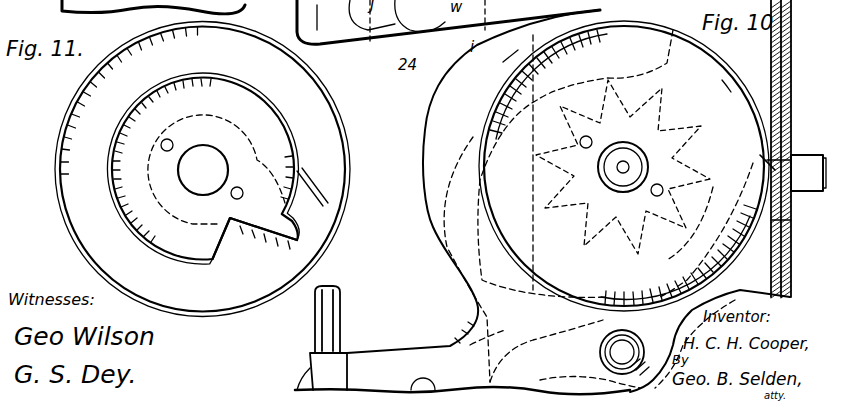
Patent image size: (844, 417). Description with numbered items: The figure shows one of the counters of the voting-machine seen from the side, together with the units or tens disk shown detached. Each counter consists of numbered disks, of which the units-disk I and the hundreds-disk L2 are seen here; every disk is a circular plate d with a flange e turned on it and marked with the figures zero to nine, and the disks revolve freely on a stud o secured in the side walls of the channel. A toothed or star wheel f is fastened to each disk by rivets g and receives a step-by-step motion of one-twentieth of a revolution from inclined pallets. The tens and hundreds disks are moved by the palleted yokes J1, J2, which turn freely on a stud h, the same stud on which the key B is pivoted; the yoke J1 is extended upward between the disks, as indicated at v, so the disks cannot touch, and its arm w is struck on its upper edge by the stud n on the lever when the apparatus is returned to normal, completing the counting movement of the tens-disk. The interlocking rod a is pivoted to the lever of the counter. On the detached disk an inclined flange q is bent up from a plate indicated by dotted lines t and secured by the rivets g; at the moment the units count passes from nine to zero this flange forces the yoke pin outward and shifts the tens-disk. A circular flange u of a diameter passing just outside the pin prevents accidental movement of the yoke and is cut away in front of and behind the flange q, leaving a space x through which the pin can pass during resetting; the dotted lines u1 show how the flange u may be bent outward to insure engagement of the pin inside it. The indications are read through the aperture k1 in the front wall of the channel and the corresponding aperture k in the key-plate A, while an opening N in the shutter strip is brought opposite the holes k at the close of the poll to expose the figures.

In FIG. 11, the units-disk I is at (202, 169).
In FIG. 11, the flange e is at (338, 108).
In FIG. 10, the flange e is at (722, 80).
In FIG. 11, the circular plate d is at (81, 167).
In FIG. 10, the circular plate d is at (615, 163).
In FIG. 11, the circular flange u is at (254, 89).
In FIG. 11, the inclined flange q is at (260, 234).
In FIG. 11, the plate t is at (230, 122).
In FIG. 11, the space x is at (234, 174).
In FIG. 11, the rivets g is at (246, 204).
In FIG. 10, the rivets g is at (650, 203).
In FIG. 11, the dotted lines u1 is at (317, 187).
In FIG. 10, the palleted yoke J1 is at (473, 196).
In FIG. 10, the palleted yoke J2 is at (542, 342).
In FIG. 10, the hundreds-disk L2 is at (624, 166).
In FIG. 10, the star wheel f is at (623, 167).
In FIG. 10, the stud o is at (623, 167).
In FIG. 10, the upward extension of the yoke v is at (511, 52).
In FIG. 10, the key-plate A is at (791, 78).
In FIG. 10, the key B is at (808, 173).
In FIG. 10, the aperture k is at (791, 156).
In FIG. 10, the aperture k1 is at (768, 156).
In FIG. 10, the opening N is at (791, 222).
In FIG. 10, the stud h is at (632, 346).
In FIG. 10, the interlocking rod a is at (340, 312).
In FIG. 10, the stud n is at (415, 380).
In FIG. 10, the arm w is at (489, 338).